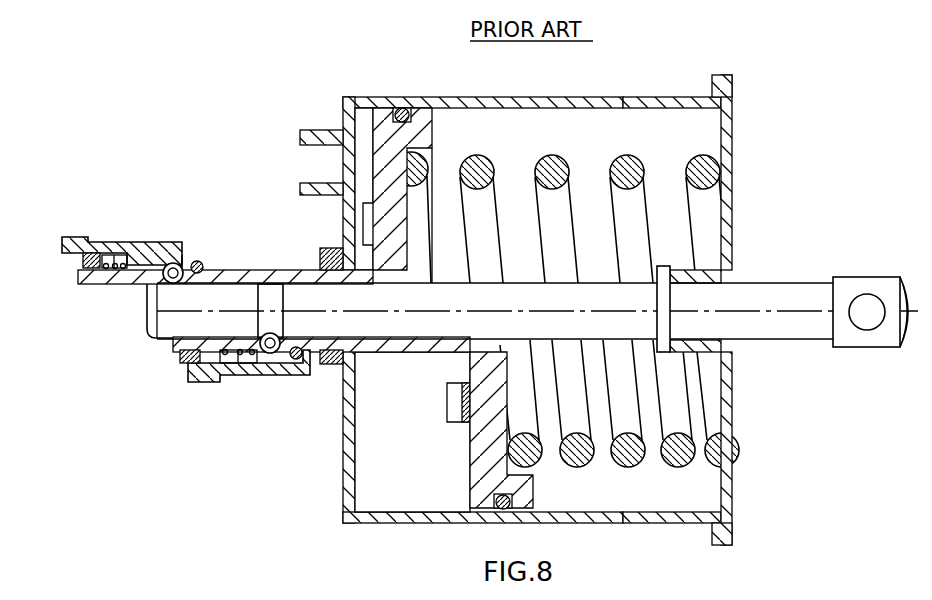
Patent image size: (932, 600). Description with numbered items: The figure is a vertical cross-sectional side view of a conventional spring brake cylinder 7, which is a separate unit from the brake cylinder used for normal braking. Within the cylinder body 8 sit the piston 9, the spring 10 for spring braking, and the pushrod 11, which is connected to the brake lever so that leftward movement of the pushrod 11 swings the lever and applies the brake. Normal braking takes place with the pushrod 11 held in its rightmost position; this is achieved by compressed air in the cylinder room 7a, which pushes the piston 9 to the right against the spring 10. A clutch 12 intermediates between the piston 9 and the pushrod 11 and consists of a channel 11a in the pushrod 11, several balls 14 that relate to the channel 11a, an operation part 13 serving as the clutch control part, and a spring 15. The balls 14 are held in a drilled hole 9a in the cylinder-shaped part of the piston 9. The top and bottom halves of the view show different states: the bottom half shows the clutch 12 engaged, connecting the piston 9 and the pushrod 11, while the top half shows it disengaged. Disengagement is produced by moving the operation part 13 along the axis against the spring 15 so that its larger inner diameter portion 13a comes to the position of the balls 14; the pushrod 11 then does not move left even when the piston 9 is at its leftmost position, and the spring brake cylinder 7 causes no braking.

The spring brake cylinder 7 is at (518, 96).
The cylinder room 7a is at (364, 120).
The cylinder body 8 is at (618, 96).
The piston 9 is at (420, 126).
The drilled hole 9a is at (197, 275).
The spring 10 is at (627, 160).
The pushrod 11 is at (787, 284).
The channel 11a is at (275, 297).
The clutch 12 is at (147, 243).
The operation part 13 is at (63, 244).
The larger inner diameter portion 13a is at (180, 262).
The balls 14 is at (165, 280).
The spring 15 is at (115, 256).